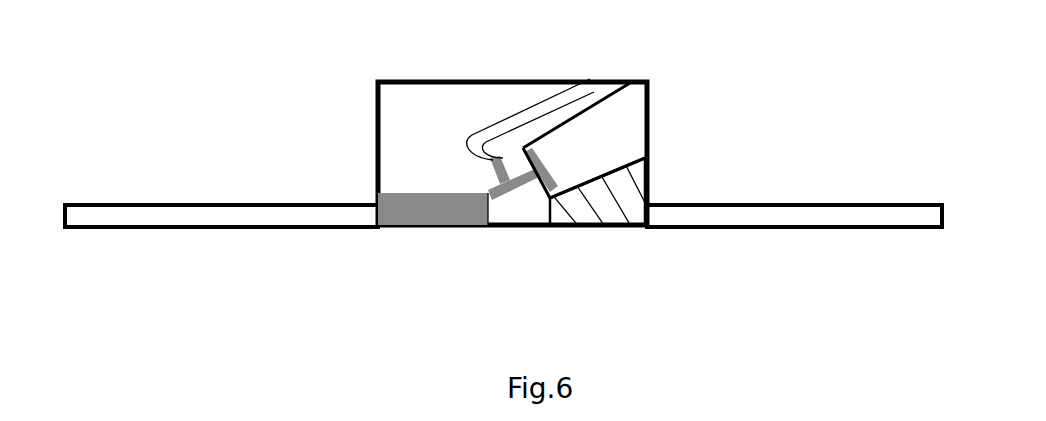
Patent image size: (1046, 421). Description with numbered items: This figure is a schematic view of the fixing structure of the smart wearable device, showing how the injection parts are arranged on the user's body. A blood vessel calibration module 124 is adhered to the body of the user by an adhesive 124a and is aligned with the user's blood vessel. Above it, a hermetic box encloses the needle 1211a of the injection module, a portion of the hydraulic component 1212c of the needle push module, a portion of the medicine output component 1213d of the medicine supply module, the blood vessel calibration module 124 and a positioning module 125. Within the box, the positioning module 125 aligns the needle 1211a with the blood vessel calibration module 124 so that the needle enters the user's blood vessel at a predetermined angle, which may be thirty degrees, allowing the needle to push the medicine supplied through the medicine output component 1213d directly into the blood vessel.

The adhesive 124a is at (229, 228).
The blood vessel calibration module 124 is at (446, 234).
The needle 1211a is at (504, 209).
The positioning module 125 is at (631, 187).
The hydraulic component 1212c is at (613, 124).
The medicine output component 1213d is at (521, 111).